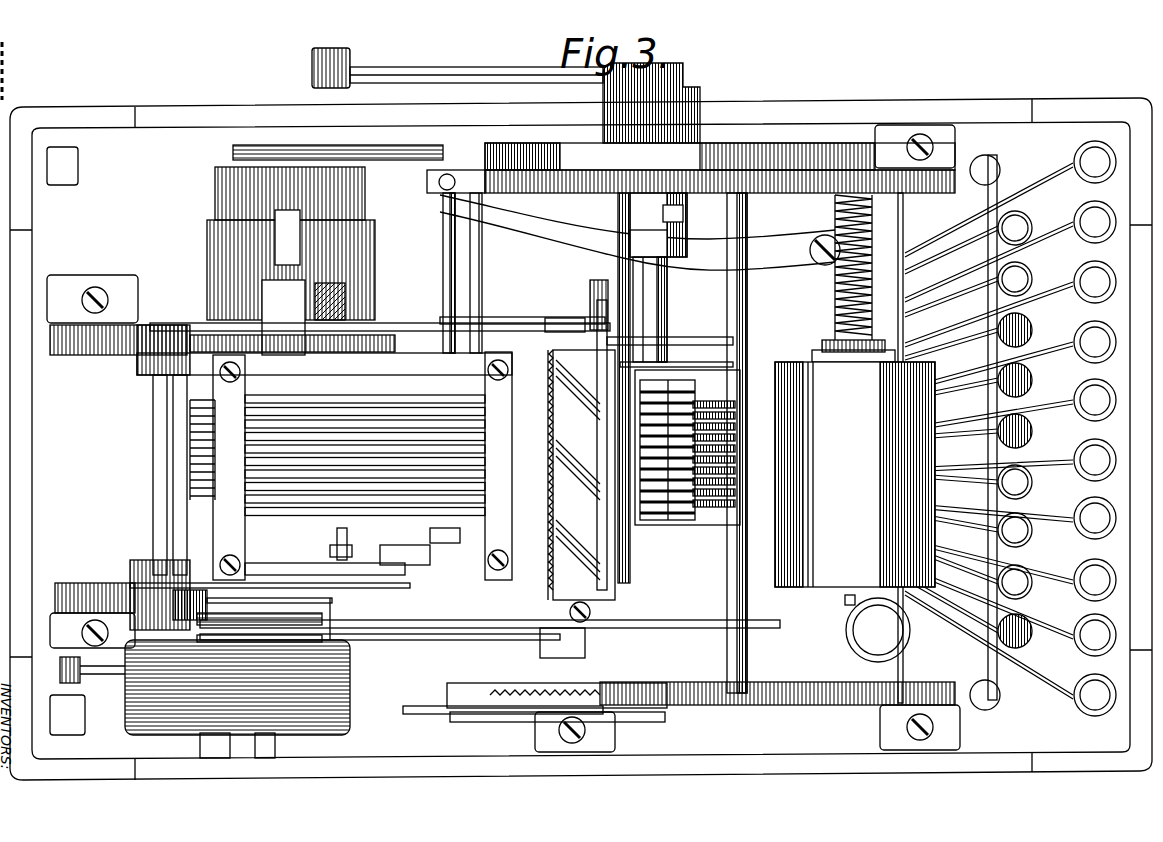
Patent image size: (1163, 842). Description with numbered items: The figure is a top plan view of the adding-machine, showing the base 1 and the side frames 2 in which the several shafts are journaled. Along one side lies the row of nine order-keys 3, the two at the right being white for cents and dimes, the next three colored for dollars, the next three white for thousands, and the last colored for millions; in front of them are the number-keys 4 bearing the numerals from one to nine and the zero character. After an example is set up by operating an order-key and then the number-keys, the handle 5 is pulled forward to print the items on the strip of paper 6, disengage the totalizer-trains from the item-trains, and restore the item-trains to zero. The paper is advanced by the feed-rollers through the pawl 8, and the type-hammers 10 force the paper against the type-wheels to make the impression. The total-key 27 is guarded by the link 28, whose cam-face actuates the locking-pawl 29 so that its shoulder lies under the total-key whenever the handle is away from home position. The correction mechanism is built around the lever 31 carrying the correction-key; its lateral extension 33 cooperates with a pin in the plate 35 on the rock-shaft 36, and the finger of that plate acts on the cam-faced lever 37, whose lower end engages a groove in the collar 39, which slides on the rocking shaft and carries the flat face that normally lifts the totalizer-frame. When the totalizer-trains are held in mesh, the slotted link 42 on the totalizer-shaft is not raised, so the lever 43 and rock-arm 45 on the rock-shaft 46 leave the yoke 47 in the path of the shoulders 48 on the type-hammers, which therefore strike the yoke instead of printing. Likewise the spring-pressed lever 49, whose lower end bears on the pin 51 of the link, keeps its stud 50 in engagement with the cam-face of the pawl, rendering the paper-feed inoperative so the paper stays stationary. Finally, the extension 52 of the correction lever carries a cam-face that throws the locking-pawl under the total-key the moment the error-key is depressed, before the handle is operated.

The base 1 is at (757, 100).
The side frames 2 is at (765, 178).
The order-keys 3 is at (1022, 240).
The number-keys 4 is at (1075, 388).
The handle 5 is at (432, 78).
The strip of paper 6 is at (768, 362).
The pawl 8 is at (500, 323).
The type-hammers 10 is at (612, 500).
The total-key 27 is at (818, 627).
The link 28 is at (408, 720).
The locking-pawl 29 is at (553, 637).
The lever 31 is at (328, 566).
The lateral extension 33 is at (400, 552).
The plate 35 is at (430, 534).
The rock-shaft 36 is at (395, 383).
The lever 37 is at (338, 532).
The collar 39 is at (330, 548).
The link 42 is at (588, 325).
The lever 43 is at (616, 408).
The rock-arm 45 is at (690, 337).
The rock-shaft 46 is at (738, 510).
The bail or yoke 47 is at (612, 412).
The shoulders 48 is at (610, 470).
The spring-pressed lever 49 is at (488, 318).
The stud 50 is at (565, 318).
The pin 51 is at (465, 322).
The extension 52 is at (402, 666).